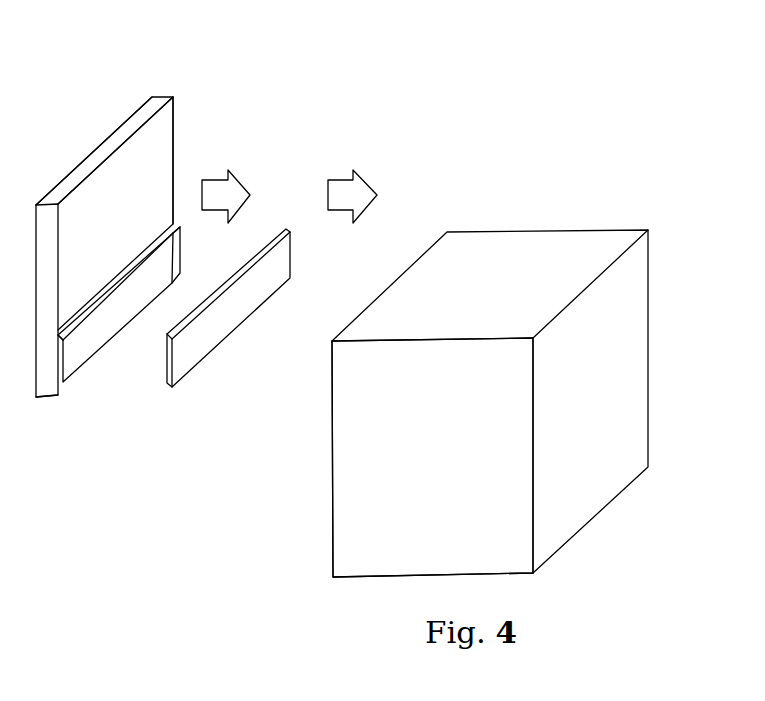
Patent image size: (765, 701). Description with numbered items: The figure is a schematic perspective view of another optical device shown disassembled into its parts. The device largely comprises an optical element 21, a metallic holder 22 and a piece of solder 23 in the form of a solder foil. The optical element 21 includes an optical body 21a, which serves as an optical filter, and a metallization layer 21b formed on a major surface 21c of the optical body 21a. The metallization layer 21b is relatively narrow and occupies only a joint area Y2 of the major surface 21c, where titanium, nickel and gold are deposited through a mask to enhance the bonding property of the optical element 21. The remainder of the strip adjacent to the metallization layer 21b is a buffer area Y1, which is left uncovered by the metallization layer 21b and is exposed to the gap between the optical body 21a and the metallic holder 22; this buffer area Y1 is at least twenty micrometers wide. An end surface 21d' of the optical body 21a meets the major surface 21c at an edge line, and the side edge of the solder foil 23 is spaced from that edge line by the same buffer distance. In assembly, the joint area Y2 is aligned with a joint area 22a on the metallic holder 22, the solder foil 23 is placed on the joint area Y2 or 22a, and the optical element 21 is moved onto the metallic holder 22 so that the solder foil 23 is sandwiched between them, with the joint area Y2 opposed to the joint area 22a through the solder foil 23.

The optical element 21 is at (181, 97).
The optical body 21a is at (93, 152).
The metallization layer 21b is at (56, 362).
The major surface 21c is at (124, 233).
The end surface 21d' is at (39, 425).
The buffer area Y1 is at (77, 370).
The joint area Y2 is at (115, 303).
The piece of solder 23 is at (212, 343).
The metallic holder 22 is at (548, 231).
The joint area 22a is at (330, 344).